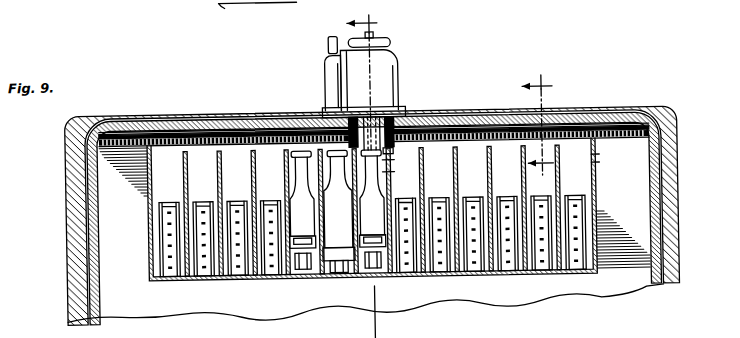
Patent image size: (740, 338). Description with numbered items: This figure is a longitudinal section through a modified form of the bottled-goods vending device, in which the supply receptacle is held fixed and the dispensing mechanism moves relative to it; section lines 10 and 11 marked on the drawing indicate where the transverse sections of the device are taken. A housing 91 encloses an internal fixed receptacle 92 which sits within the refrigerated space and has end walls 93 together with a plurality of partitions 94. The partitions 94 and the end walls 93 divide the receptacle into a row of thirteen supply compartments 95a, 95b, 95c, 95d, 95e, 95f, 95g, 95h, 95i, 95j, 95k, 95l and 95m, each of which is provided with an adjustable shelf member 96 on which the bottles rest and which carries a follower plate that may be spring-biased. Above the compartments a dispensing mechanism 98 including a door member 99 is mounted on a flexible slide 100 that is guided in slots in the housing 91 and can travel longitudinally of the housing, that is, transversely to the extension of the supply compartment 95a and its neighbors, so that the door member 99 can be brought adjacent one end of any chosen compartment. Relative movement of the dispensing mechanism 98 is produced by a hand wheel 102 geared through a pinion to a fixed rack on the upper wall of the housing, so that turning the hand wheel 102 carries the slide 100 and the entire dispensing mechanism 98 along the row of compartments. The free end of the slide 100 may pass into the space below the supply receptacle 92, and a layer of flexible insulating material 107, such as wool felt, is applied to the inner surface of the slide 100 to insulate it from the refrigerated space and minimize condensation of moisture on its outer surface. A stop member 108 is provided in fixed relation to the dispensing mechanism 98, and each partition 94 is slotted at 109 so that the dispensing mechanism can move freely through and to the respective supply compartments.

The section line 10 is at (374, 173).
The section line 11 is at (545, 130).
The housing 91 is at (686, 119).
The internal fixed receptacle 92 is at (203, 279).
The end walls 93 is at (148, 212).
The partitions 94 is at (186, 193).
The supply compartment 95a is at (169, 151).
The supply compartment 95b is at (206, 151).
The supply compartment 95c is at (221, 279).
The supply compartment 95d is at (269, 280).
The supply compartment 95e is at (302, 279).
The supply compartment 95f is at (326, 279).
The supply compartment 95g is at (388, 277).
The supply compartment 95h is at (422, 281).
The supply compartment 95i is at (423, 277).
The supply compartment 95j is at (463, 277).
The supply compartment 95k is at (521, 277).
The supply compartment 95l is at (552, 277).
The supply compartment 95m is at (579, 153).
The adjustable shelf member 96 is at (304, 234).
The dispensing mechanism 98 is at (402, 75).
The door member 99 is at (392, 102).
The flexible slide 100 is at (477, 124).
The hand wheel 102 is at (192, 335).
The layer of flexible insulating material 107 is at (303, 126).
The stop member 108 is at (389, 166).
The slot 109 is at (388, 168).